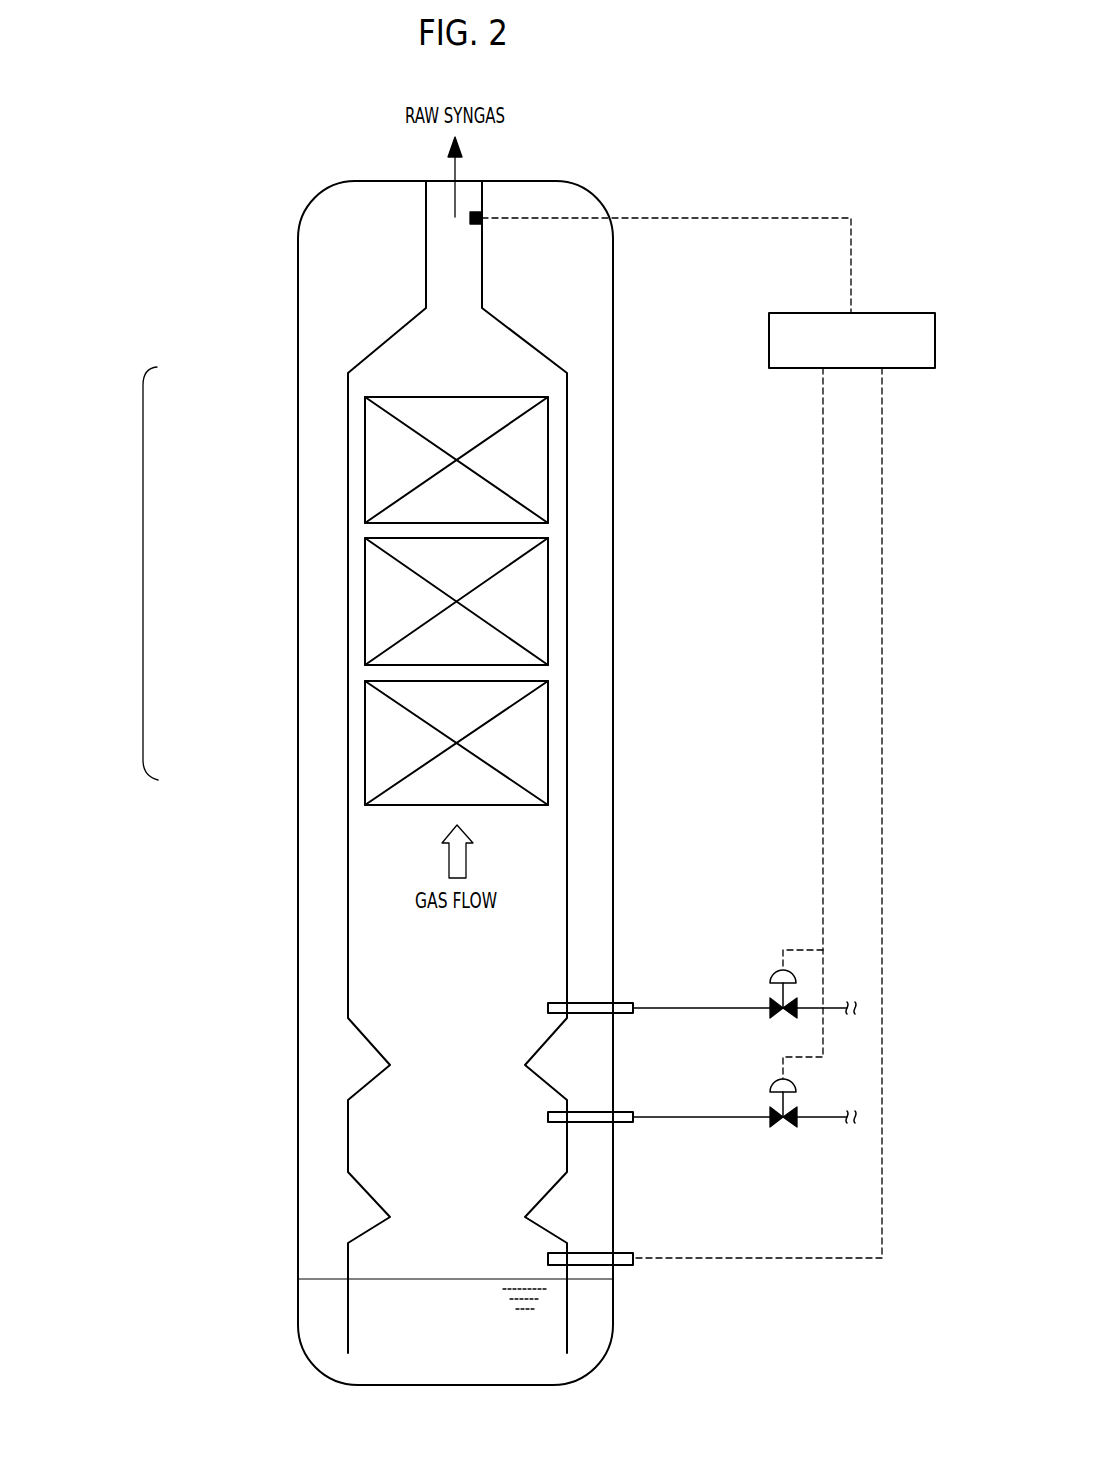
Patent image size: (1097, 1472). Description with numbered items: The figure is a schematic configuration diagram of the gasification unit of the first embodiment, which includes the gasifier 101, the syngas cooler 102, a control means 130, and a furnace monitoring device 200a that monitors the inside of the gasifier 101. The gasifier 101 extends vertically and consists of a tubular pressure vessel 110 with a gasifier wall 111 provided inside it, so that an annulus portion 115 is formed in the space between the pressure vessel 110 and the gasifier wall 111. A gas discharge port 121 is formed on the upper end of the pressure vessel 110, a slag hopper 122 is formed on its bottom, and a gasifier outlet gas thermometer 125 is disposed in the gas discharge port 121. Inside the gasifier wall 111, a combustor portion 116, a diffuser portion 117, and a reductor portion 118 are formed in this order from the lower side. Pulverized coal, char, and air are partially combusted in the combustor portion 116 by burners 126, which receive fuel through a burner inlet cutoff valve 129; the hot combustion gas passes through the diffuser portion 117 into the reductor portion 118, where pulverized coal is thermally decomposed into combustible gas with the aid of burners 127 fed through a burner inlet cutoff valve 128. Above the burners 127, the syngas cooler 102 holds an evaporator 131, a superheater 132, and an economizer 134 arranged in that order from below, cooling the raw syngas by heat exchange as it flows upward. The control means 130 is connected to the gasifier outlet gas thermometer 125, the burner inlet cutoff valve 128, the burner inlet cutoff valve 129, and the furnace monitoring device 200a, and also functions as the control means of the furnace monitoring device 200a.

The gasifier 101 is at (215, 195).
The syngas cooler 102 is at (128, 396).
The pressure vessel 110 is at (613, 713).
The gasifier wall 111 is at (567, 802).
The annulus portion 115 is at (590, 632).
The combustor portion 116 is at (465, 1180).
The diffuser portion 117 is at (465, 1072).
The reductor portion 118 is at (465, 973).
The gas discharge port 121 is at (468, 181).
The slag hopper 122 is at (580, 1367).
The gasifier outlet gas thermometer 125 is at (475, 210).
The burner 126 is at (636, 1112).
The burner 127 is at (636, 1003).
The burner inlet cutoff valve 128 is at (780, 968).
The burner inlet cutoff valve 129 is at (770, 1085).
The control means 130 is at (880, 313).
The evaporator 131 is at (363, 762).
The superheater 132 is at (363, 602).
The economizer 134 is at (363, 448).
The furnace monitoring device 200a is at (636, 1262).